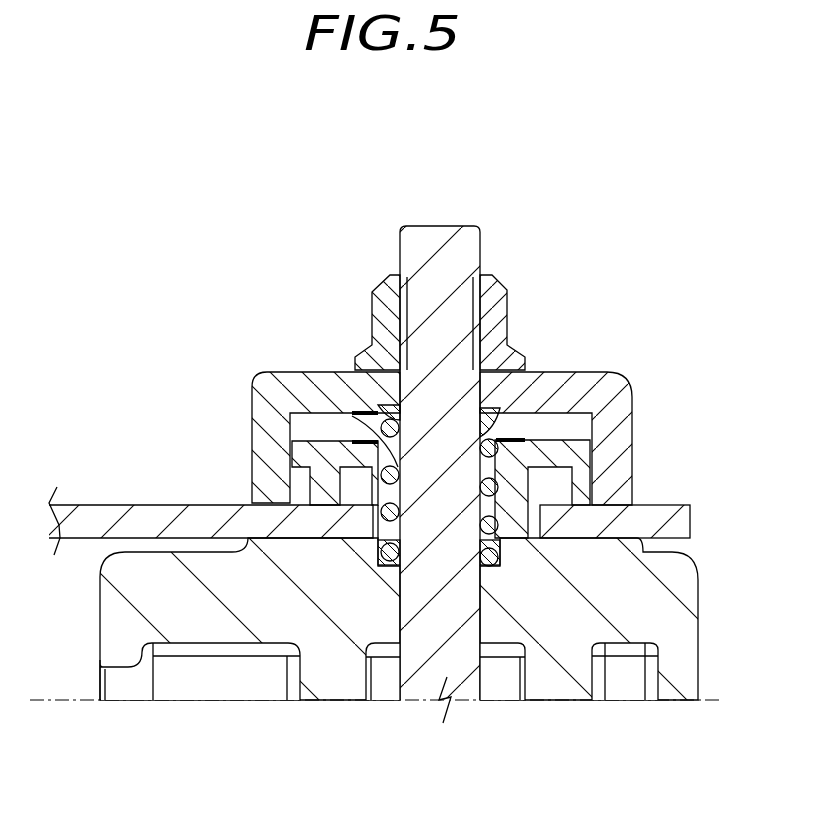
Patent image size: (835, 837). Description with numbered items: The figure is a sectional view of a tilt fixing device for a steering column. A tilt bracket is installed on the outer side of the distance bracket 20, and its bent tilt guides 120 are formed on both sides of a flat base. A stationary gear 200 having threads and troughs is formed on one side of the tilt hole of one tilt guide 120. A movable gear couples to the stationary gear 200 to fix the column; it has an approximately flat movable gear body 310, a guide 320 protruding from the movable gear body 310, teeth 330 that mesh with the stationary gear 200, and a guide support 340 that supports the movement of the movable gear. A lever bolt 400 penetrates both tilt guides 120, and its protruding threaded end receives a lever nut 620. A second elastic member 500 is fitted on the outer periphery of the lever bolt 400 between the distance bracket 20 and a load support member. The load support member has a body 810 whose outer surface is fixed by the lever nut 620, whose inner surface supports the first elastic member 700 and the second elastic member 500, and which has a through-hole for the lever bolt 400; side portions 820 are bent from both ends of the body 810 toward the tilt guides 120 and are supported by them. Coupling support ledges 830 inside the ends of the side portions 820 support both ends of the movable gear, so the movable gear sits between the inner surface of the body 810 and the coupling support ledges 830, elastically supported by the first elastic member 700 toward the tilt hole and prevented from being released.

The distance bracket 20 is at (150, 525).
The tilt guide 120 is at (165, 518).
The stationary gear 200 is at (630, 506).
The movable gear body 310 is at (318, 443).
The guide 320 is at (345, 538).
The teeth 330 is at (528, 487).
The guide support 340 is at (325, 483).
The lever bolt 400 is at (558, 600).
The second elastic member 500 is at (370, 540).
The lever nut 620 is at (500, 316).
The first elastic member 700 is at (502, 433).
The body 810 is at (332, 378).
The side portions 820 is at (617, 412).
The coupling support ledges 830 is at (528, 530).